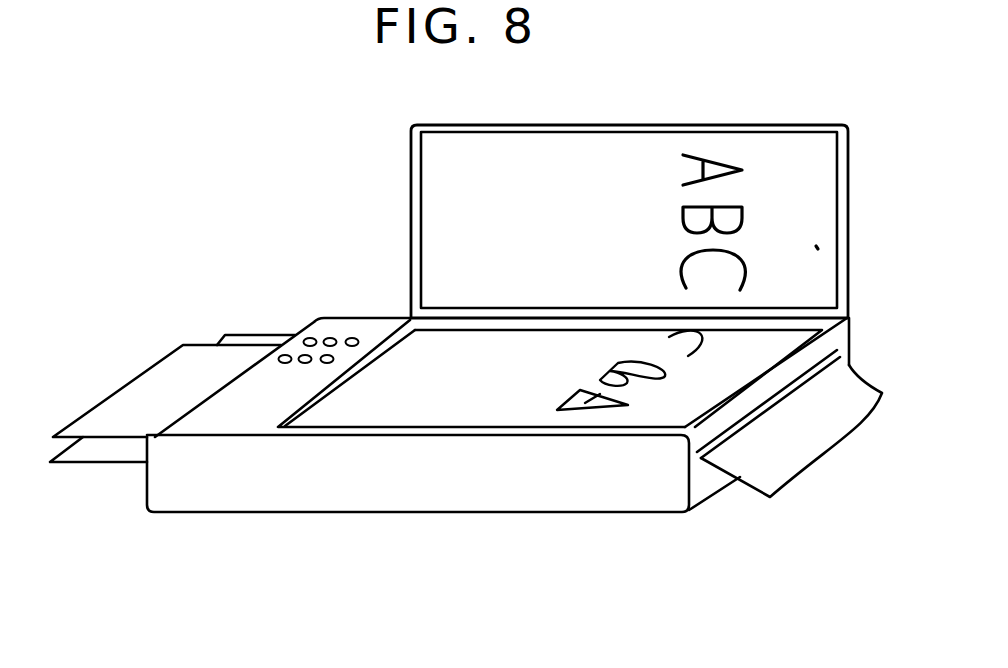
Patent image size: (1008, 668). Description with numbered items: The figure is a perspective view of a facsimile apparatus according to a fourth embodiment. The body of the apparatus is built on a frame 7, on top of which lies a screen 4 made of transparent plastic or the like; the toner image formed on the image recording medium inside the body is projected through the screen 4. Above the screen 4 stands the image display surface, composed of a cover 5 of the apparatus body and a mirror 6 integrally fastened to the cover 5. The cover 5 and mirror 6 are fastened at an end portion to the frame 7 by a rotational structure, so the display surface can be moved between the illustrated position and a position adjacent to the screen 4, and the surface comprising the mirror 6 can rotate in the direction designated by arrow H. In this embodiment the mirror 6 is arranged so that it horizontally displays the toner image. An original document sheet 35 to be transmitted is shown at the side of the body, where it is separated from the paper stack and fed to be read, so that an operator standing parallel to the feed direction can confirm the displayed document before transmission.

The screen 4 is at (410, 368).
The cover 5 is at (617, 128).
The mirror 6 is at (781, 150).
The frame 7 is at (195, 493).
The original document sheet 35 is at (173, 373).
The arrow H is at (817, 247).